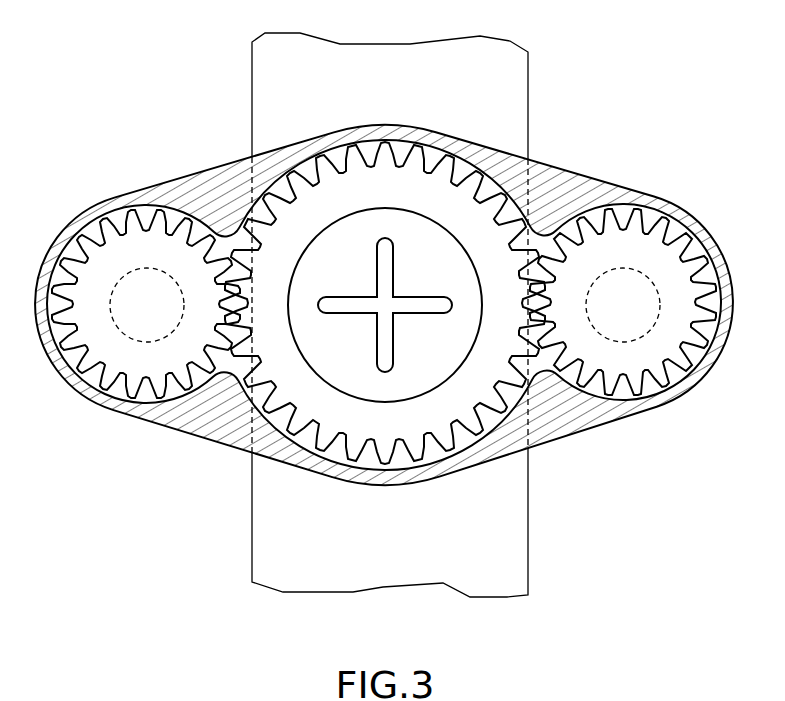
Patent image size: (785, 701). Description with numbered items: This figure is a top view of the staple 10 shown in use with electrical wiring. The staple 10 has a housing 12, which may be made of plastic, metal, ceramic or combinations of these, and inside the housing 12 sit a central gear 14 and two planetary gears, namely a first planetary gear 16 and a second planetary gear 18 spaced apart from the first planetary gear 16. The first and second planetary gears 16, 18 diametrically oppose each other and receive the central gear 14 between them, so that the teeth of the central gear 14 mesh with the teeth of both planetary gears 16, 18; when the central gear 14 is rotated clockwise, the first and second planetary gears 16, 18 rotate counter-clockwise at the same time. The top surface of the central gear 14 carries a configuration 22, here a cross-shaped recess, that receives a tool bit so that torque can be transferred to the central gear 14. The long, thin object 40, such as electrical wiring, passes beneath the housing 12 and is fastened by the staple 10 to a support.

The staple 10 is at (603, 116).
The housing 12 is at (507, 455).
The central gear 14 is at (312, 202).
The first planetary gear 16 is at (80, 332).
The second planetary gear 18 is at (637, 367).
The configuration 22 is at (412, 260).
The long, thin objects 40 is at (477, 510).